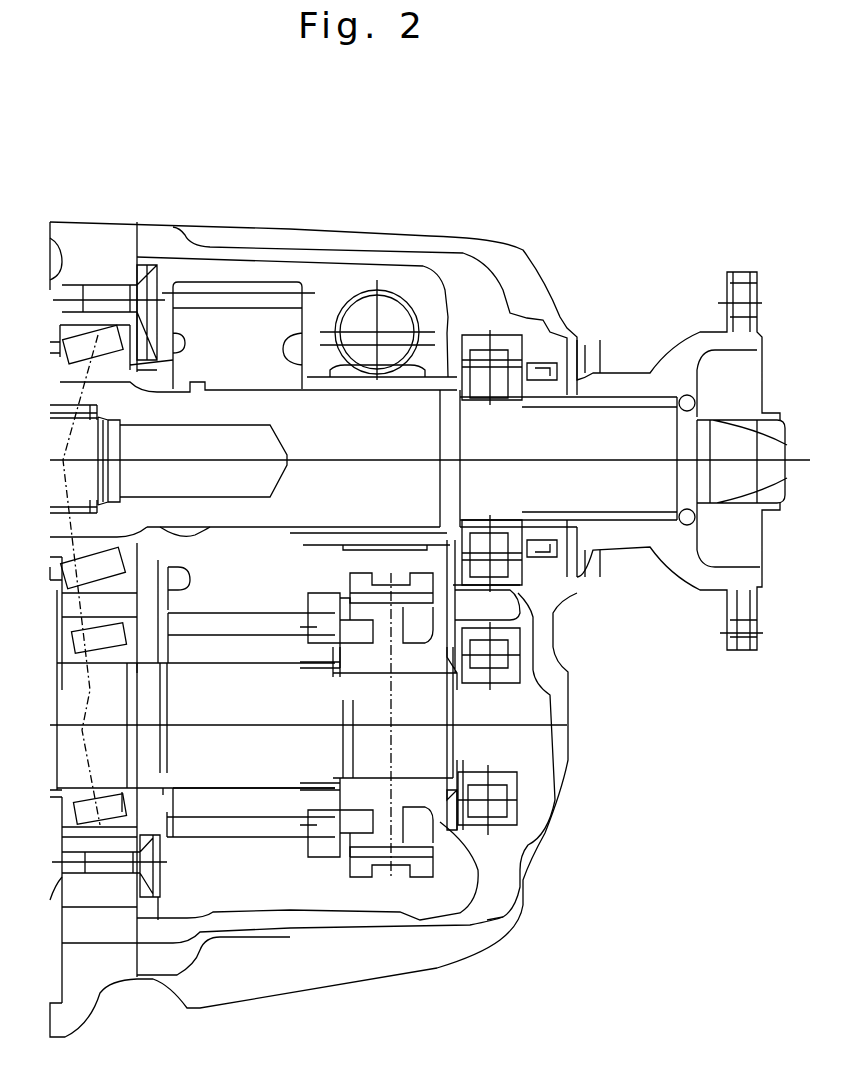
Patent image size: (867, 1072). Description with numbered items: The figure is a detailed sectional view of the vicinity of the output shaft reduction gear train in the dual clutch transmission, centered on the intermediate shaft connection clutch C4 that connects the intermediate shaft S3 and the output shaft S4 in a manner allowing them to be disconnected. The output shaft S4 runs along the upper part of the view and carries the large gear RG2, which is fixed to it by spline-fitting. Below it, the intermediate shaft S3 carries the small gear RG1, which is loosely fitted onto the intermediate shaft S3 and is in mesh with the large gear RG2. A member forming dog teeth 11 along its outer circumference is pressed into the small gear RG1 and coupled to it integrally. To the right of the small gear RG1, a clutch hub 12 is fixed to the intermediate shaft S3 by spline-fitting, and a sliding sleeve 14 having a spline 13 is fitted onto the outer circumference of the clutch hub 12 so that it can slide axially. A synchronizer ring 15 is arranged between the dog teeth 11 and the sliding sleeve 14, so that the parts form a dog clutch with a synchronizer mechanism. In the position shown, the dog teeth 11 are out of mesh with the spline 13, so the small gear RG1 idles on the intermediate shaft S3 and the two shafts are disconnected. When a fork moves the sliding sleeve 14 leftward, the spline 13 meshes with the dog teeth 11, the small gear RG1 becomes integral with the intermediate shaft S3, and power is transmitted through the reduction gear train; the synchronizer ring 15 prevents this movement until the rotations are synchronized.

The large gear RG2 is at (222, 300).
The output shaft S4 is at (367, 449).
The intermediate shaft S3 is at (264, 712).
The small gear RG1 is at (200, 833).
The intermediate shaft connection clutch C4 is at (430, 800).
The dog teeth 11 is at (320, 865).
The clutch hub 12 is at (432, 799).
The spline 13 is at (373, 857).
The sliding sleeve 14 is at (420, 873).
The synchronizer ring 15 is at (343, 860).